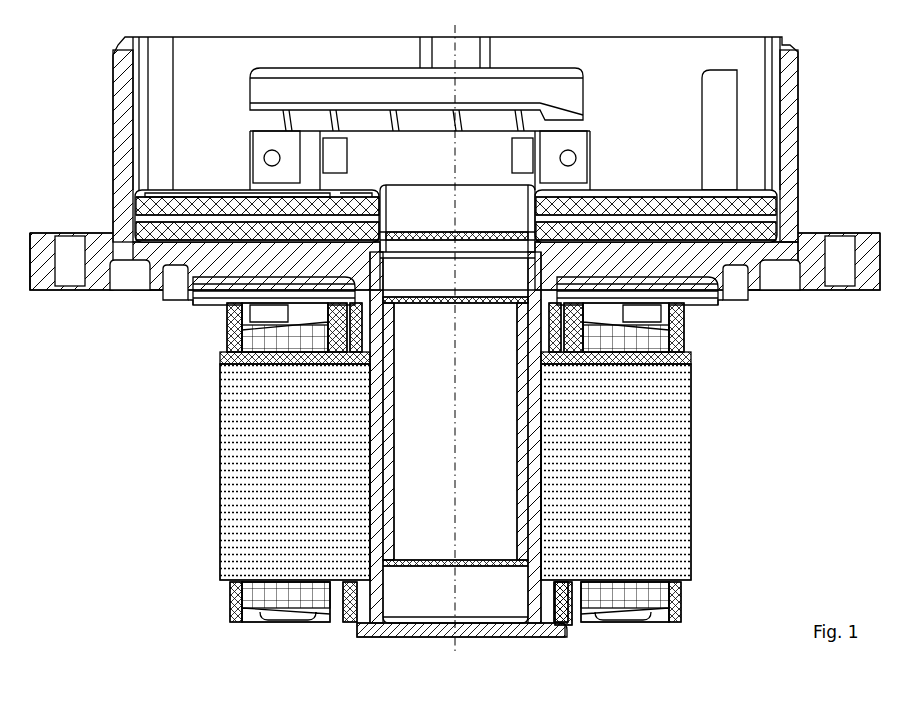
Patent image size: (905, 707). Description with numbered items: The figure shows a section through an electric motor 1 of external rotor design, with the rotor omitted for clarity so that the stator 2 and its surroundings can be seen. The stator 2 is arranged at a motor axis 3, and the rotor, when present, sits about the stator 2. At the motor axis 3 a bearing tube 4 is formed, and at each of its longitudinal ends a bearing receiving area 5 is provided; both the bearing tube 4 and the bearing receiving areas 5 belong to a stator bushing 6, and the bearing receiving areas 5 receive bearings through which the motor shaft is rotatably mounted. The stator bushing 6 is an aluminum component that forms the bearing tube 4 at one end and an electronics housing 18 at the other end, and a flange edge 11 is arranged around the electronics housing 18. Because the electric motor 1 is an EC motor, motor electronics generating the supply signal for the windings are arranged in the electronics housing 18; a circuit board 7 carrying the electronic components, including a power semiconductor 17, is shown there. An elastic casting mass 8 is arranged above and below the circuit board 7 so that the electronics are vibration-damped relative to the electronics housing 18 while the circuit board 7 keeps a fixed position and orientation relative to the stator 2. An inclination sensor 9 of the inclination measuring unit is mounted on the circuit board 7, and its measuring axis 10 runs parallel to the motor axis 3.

The electric motor 1 is at (76, 95).
The stator 2 is at (237, 418).
The motor axis 3 is at (460, 641).
The bearing tube 4 is at (512, 450).
The bearing receiving area 5 is at (522, 282).
The stator bushing 6 is at (743, 255).
The circuit board 7 is at (773, 218).
The casting mass 8 is at (775, 200).
The inclination sensor 9 is at (257, 213).
The measuring axis of the inclination sensor 10 is at (247, 258).
The flange edge 11 is at (33, 268).
The power semiconductor 17 is at (360, 160).
The electronics housing 18 is at (790, 105).